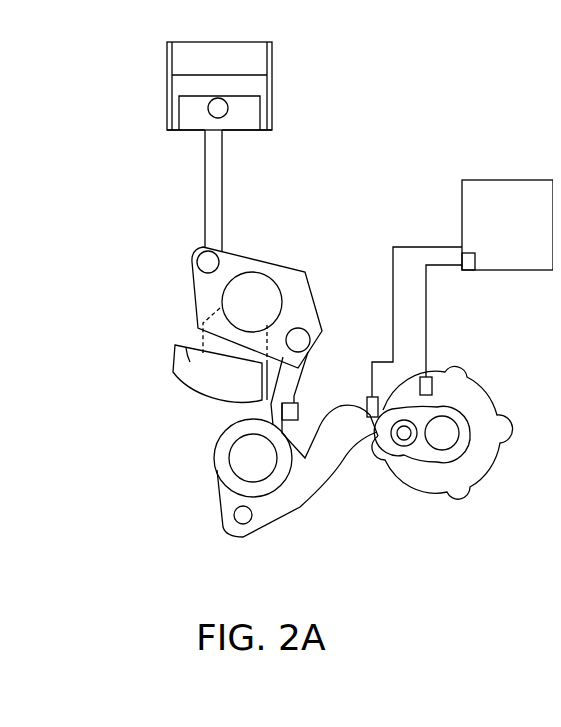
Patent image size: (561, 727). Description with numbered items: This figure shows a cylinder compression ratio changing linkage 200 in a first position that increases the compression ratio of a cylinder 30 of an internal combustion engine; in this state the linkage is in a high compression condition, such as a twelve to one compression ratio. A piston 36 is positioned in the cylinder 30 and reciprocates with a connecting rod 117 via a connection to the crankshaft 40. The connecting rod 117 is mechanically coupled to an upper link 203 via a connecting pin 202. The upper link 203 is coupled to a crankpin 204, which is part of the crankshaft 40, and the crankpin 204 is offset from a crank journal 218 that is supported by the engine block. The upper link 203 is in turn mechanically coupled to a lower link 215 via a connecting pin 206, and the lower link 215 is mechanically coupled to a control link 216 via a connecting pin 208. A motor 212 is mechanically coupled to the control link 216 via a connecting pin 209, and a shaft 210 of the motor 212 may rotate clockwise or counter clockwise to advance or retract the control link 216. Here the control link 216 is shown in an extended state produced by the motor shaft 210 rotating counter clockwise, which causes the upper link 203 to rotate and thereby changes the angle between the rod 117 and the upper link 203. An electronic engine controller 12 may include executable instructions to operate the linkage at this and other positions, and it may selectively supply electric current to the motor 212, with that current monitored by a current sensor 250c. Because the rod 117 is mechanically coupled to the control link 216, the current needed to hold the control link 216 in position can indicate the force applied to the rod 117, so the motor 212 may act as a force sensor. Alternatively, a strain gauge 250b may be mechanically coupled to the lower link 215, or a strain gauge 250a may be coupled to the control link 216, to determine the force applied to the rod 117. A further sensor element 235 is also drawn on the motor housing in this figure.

The electronic engine controller 12 is at (507, 225).
The combustion chamber 30 is at (223, 42).
The piston 36 is at (192, 76).
The crankshaft 40 is at (183, 343).
The connecting rod 117 is at (225, 160).
The compression ratio changing linkage 200 is at (112, 229).
The connecting pin 202 is at (204, 253).
The upper link 203 is at (303, 270).
The crankpin 204 is at (282, 300).
The connecting pin 206 is at (308, 337).
The connecting pin 208 is at (240, 464).
The connecting pin 209 is at (400, 445).
The motor shaft 210 is at (438, 433).
The motor 212 is at (478, 378).
The lower link 215 is at (262, 408).
The control link 216 is at (300, 507).
The crank journal 218 is at (216, 306).
The position sensor 235 is at (428, 375).
The strain gauge 250a is at (368, 397).
The strain gauge 250b is at (298, 410).
The current sensor 250c is at (470, 272).